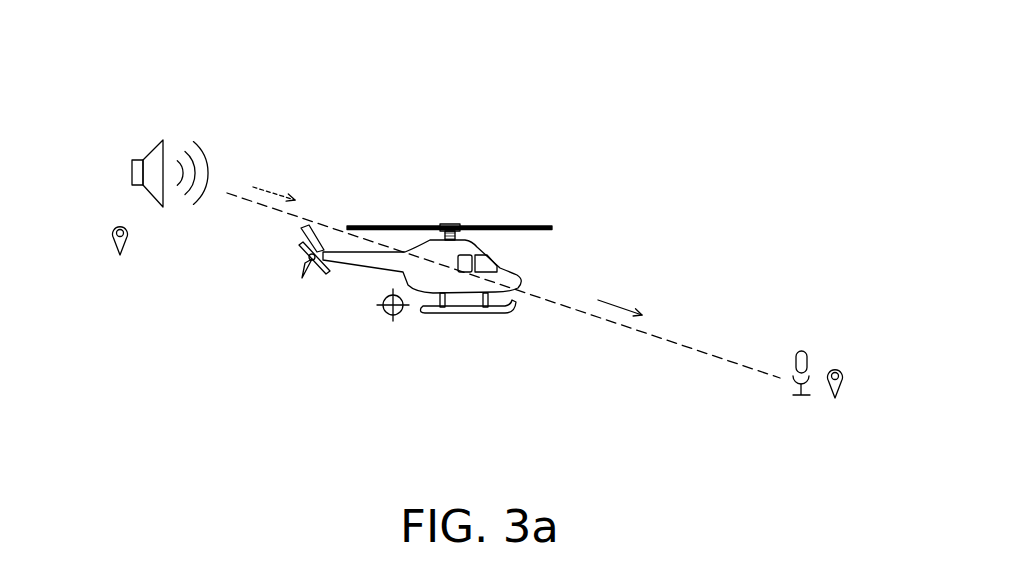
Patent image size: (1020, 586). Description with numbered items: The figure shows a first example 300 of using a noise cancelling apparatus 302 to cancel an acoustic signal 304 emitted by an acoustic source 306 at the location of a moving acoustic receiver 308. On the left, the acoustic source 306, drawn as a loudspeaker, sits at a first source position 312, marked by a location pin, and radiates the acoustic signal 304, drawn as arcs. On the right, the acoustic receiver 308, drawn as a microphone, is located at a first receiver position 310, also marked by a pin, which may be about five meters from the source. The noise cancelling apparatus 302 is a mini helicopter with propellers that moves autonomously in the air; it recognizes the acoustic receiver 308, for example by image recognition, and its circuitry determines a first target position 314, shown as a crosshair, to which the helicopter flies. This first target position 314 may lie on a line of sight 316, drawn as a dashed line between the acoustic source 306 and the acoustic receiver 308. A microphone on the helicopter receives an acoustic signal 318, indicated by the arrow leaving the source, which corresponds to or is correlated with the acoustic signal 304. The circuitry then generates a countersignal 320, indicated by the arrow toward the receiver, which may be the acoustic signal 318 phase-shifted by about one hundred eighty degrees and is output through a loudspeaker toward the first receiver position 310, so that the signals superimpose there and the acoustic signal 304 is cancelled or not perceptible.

The first example 300 is at (150, 88).
The noise cancelling apparatus 302 is at (485, 225).
The acoustic signal 304 is at (203, 146).
The acoustic source 306 is at (131, 168).
The acoustic receiver 308 is at (795, 395).
The first receiver position 310 is at (839, 371).
The first source position 312 is at (117, 254).
The first target position 314 is at (387, 313).
The line of sight 316 is at (700, 354).
The acoustic signal 318 is at (273, 190).
The countersignal 320 is at (617, 304).